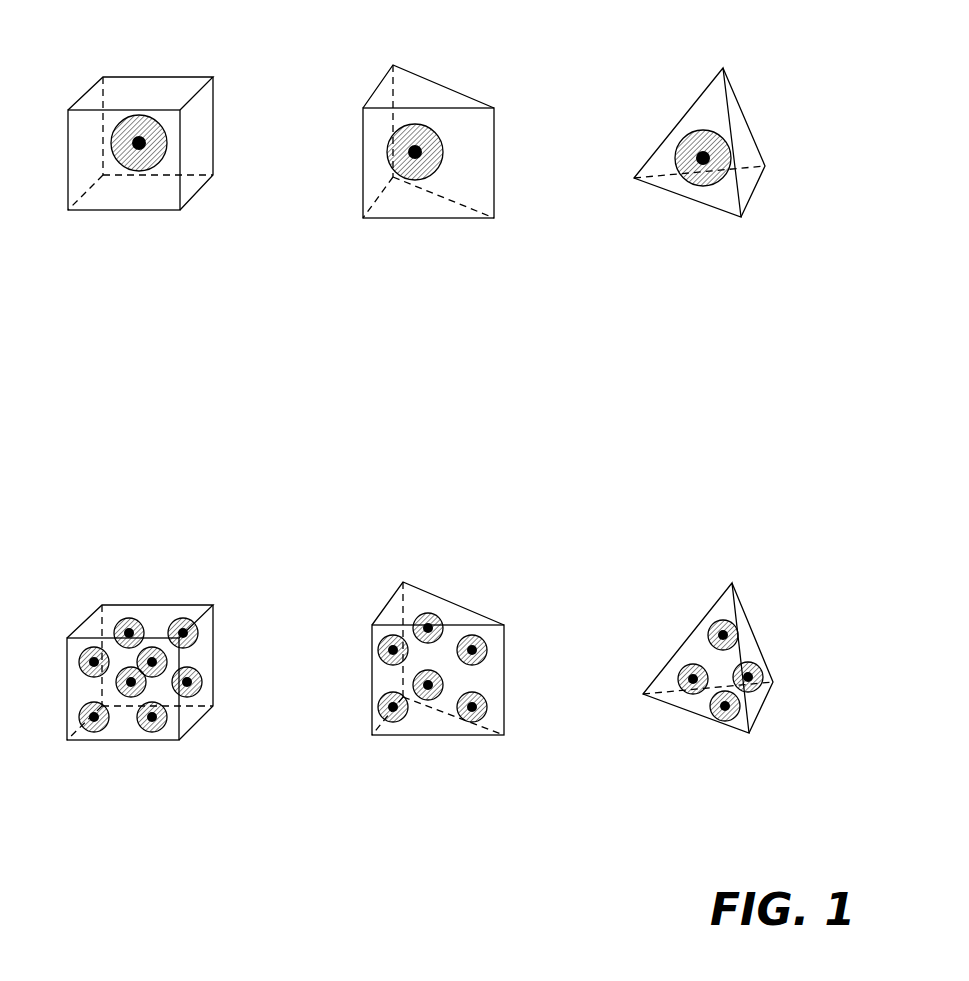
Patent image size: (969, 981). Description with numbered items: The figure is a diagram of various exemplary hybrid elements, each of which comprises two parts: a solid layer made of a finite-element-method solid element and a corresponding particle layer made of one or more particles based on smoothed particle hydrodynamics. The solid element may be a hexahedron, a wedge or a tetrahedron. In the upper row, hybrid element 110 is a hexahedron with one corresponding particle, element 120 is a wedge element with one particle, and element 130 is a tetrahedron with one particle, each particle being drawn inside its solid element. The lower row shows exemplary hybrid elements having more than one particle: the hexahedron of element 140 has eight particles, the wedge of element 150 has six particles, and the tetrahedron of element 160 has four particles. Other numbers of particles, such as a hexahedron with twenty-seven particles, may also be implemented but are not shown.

The hybrid element 110 is at (160, 77).
The wedge element 120 is at (445, 82).
The tetrahedron element 130 is at (755, 128).
The hexahedron hybrid element with eight particles 140 is at (160, 602).
The wedge hybrid element with six particles 150 is at (462, 605).
The tetrahedron hybrid element with four particles 160 is at (763, 646).